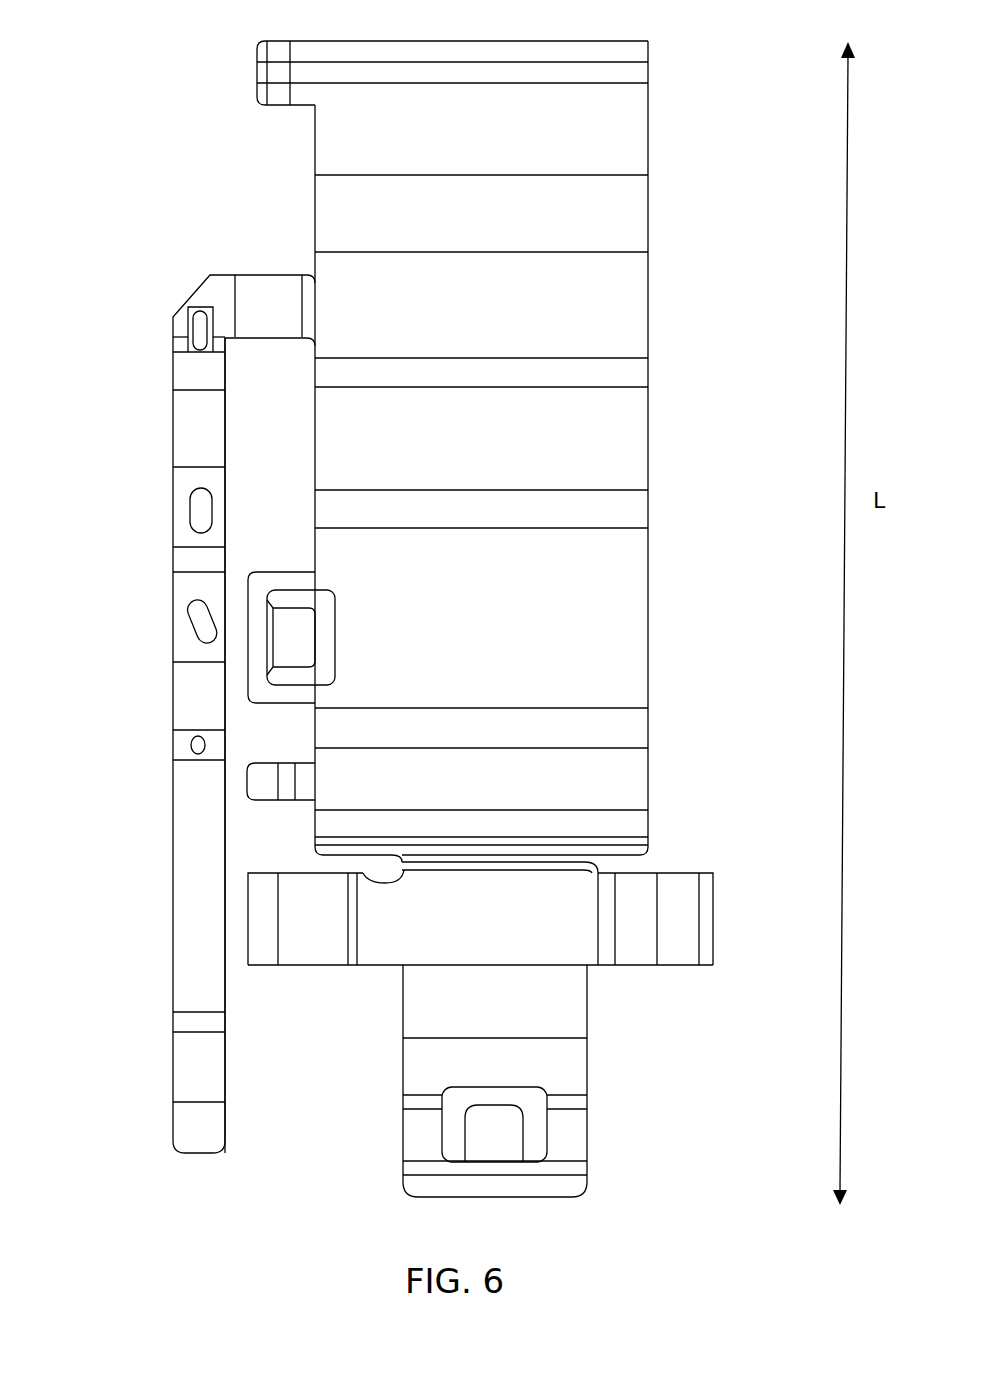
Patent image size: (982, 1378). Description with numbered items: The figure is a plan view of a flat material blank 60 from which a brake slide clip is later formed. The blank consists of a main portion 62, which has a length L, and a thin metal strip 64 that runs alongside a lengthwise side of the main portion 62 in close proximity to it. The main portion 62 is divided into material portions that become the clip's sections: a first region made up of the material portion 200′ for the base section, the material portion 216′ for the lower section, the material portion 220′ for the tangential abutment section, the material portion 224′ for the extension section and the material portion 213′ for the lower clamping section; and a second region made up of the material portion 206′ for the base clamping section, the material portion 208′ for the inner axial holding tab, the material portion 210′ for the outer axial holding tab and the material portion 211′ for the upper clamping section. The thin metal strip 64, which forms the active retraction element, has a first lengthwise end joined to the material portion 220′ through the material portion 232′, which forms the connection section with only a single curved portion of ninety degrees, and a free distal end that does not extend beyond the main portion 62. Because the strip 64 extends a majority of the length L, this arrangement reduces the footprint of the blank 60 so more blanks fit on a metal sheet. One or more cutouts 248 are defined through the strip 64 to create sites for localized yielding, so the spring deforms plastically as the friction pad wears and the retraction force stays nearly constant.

The material blank 60 is at (70, 46).
The main portion 62 is at (221, 175).
The thin metal strip 64 is at (121, 422).
The material portion of metal strip 232′ is at (208, 288).
The material portion 224′ is at (643, 148).
The material portion 220′ is at (625, 300).
The material portion 216′ is at (640, 447).
The material portion 200′ is at (625, 620).
The material portion 213′ is at (633, 778).
The material portion 208′ is at (690, 882).
The material portion 206′ is at (548, 943).
The material portion 210′ is at (327, 927).
The material portion 211′ is at (533, 1037).
The cutouts 248 is at (188, 613).